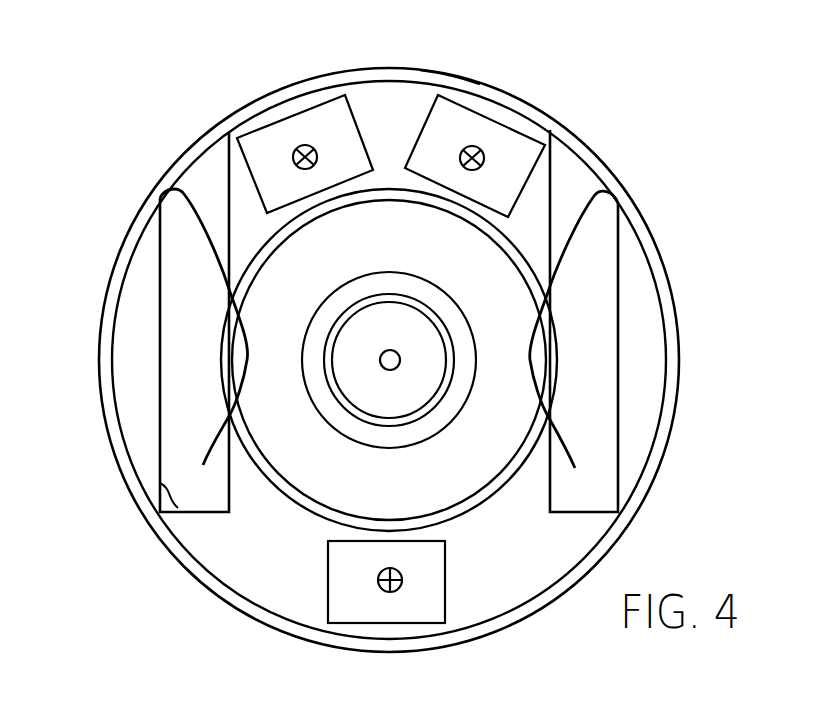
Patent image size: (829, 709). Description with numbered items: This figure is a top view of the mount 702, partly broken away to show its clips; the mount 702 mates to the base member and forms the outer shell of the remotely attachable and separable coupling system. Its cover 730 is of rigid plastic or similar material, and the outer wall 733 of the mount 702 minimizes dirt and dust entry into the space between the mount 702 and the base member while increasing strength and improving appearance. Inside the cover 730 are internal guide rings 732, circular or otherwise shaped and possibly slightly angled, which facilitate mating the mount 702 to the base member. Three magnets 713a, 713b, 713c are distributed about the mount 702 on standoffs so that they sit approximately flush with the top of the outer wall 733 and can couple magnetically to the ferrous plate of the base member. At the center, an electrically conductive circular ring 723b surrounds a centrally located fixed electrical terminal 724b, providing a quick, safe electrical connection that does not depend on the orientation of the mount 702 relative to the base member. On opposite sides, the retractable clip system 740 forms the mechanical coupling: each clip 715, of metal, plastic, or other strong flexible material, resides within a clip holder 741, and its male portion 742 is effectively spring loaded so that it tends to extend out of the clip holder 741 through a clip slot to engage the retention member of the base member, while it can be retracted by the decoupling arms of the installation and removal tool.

The mount 702 is at (468, 12).
The cover 730 is at (299, 80).
The internal guide rings 732 is at (392, 188).
The outer wall 733 is at (448, 70).
The magnet 713a is at (407, 625).
The magnet 713b is at (510, 125).
The magnet 713c is at (310, 107).
The clip 715 is at (172, 514).
The retractable clip system 740 is at (256, 409).
The clip holder 741 is at (158, 483).
The male portion 742 is at (243, 360).
The electrically conductive circular ring 723b is at (420, 446).
The fixed electrical terminal 724b is at (392, 372).